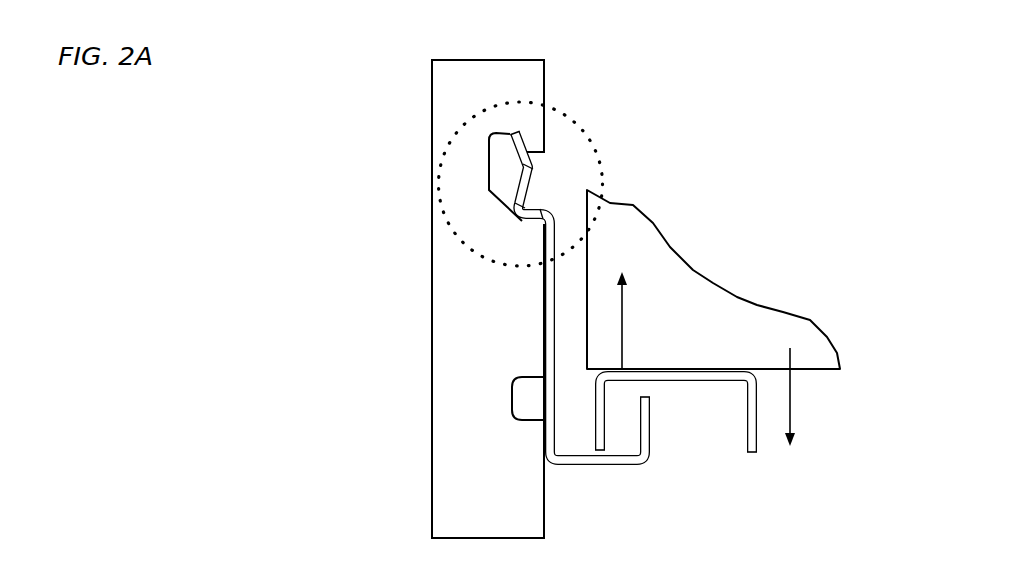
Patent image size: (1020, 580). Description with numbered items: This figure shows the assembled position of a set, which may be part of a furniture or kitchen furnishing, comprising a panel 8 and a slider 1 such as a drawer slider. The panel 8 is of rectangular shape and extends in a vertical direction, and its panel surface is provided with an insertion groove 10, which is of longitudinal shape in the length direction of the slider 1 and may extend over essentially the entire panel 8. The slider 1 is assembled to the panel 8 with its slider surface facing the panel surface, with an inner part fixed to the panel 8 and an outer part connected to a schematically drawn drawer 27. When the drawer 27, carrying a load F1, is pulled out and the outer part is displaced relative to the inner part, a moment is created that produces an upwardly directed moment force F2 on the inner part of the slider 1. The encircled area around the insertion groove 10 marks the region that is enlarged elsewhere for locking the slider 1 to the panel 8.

The slider 1 is at (636, 496).
The panel 8 is at (438, 330).
The insertion groove 10 is at (546, 182).
The drawer 27 is at (685, 305).
The load F1 is at (791, 411).
The upwardly directed moment force F2 is at (642, 320).